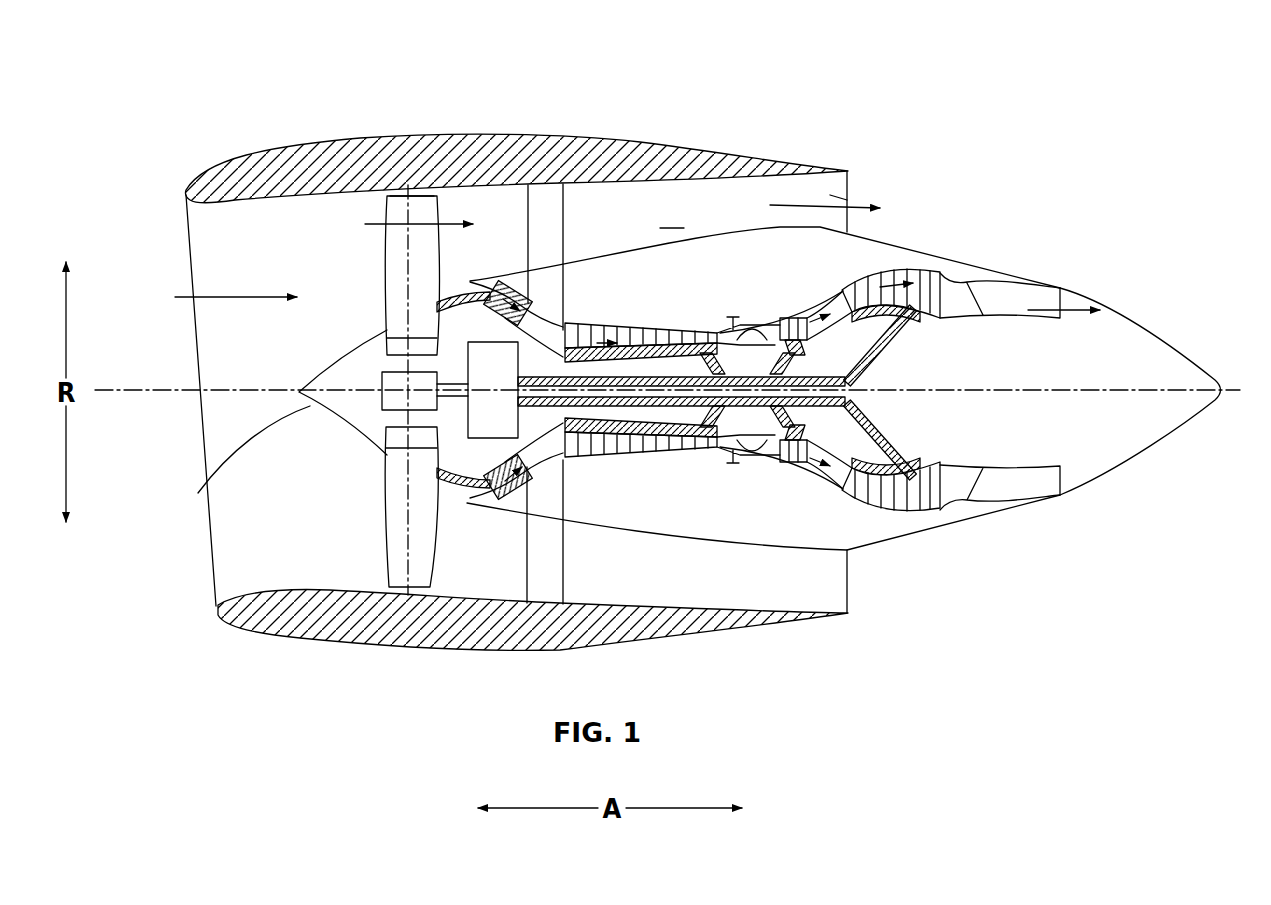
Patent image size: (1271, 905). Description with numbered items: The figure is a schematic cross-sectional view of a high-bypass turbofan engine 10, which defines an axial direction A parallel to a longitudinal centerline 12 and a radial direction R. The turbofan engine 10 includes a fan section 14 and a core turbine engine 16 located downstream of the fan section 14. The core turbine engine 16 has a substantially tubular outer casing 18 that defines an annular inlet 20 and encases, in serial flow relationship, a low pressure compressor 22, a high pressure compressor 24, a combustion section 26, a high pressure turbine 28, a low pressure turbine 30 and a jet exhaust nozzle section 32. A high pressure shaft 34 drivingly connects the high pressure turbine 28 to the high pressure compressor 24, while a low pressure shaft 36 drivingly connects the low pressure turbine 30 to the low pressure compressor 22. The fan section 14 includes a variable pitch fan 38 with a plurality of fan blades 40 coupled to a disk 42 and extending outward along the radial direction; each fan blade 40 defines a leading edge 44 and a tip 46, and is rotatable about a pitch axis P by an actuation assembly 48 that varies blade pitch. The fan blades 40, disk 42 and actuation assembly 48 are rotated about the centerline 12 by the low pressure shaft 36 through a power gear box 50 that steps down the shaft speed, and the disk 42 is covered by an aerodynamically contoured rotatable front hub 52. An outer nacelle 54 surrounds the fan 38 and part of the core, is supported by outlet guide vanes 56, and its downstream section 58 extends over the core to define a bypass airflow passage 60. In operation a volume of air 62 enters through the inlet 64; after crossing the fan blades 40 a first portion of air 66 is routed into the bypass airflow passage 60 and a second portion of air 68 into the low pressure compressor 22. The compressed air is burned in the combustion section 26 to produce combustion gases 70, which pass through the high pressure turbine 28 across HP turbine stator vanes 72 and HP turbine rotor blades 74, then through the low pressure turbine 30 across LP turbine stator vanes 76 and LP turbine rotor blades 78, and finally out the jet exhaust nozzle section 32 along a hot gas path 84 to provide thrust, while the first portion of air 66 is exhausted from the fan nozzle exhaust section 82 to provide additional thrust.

The turbofan engine 10 is at (983, 150).
The longitudinal centerline 12 is at (1012, 388).
The fan section 14 is at (425, 105).
The core turbine engine 16 is at (727, 285).
The outer casing 18 is at (713, 548).
The annular inlet 20 is at (477, 492).
The low pressure compressor 22 is at (530, 455).
The high pressure compressor 24 is at (592, 442).
The combustion section 26 is at (753, 447).
The high pressure turbine 28 is at (830, 457).
The low pressure turbine 30 is at (925, 510).
The jet exhaust nozzle section 32 is at (983, 495).
The high pressure shaft 34 is at (790, 345).
The low pressure shaft 36 is at (873, 357).
The variable pitch fan 38 is at (353, 438).
The fan blades 40 is at (380, 533).
The disk 42 is at (403, 350).
The leading edge 44 is at (383, 291).
The tip 46 is at (404, 195).
The actuation assembly 48 is at (380, 369).
The power gear box 50 is at (503, 363).
The front hub 52 is at (212, 478).
The outer nacelle 54 is at (428, 650).
The outlet guide vanes 56 is at (563, 212).
The downstream section 58 is at (770, 158).
The bypass airflow passage 60 is at (767, 197).
The volume of air 62 is at (232, 297).
The inlet 64 is at (213, 597).
The first portion of air 66 is at (403, 218).
The second portion of air 68 is at (463, 288).
The combustion gases 70 is at (890, 267).
The HP turbine stator vanes 72 is at (767, 463).
The HP turbine rotor blades 74 is at (820, 427).
The LP turbine stator vanes 76 is at (853, 495).
The LP turbine rotor blades 78 is at (853, 498).
The fan nozzle exhaust section 82 is at (837, 190).
The hot gas path 84 is at (840, 290).
The pitch axis P is at (413, 207).